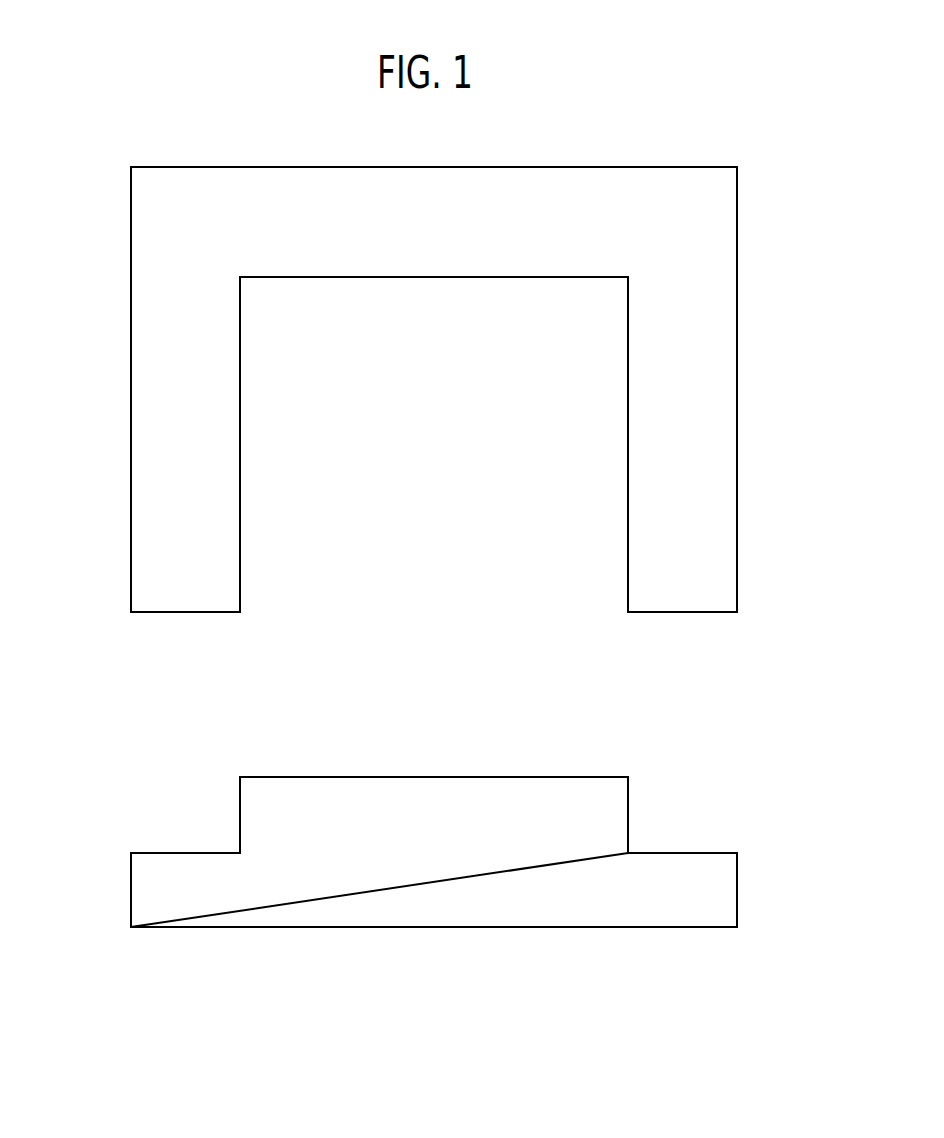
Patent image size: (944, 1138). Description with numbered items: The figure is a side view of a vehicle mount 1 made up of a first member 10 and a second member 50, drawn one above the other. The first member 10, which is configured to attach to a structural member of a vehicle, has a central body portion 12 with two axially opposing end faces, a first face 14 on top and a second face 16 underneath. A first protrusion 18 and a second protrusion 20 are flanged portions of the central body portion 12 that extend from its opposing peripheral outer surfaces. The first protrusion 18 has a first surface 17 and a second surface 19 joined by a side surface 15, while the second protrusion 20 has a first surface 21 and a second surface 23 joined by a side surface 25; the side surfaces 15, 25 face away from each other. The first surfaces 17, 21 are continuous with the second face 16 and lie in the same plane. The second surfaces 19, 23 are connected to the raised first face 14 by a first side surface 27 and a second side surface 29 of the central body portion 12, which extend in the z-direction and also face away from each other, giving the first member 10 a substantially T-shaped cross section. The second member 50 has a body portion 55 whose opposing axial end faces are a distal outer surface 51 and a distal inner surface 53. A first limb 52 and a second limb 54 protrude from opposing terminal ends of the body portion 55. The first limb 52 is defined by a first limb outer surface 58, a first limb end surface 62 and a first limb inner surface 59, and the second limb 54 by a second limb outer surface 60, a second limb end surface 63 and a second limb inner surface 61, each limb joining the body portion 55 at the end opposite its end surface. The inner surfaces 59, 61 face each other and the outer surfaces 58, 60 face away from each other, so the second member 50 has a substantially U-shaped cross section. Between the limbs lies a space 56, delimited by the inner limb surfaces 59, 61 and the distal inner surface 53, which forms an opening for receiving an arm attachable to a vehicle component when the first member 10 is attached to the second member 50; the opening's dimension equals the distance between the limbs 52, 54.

The vehicle mount 1 is at (700, 115).
The first member 10 is at (522, 908).
The central body portion 12 is at (420, 872).
The first face 14 is at (452, 777).
The side surface 15 is at (131, 890).
The second face 16 is at (415, 927).
The first surface 17 is at (197, 927).
The first protrusion 18 is at (185, 898).
The second surface 19 is at (159, 853).
The second protrusion 20 is at (713, 897).
The first surface 21 is at (692, 927).
The second surface 23 is at (703, 853).
The side surface 25 is at (737, 887).
The first side surface 27 is at (239, 808).
The second side surface 29 is at (628, 805).
The second member 50 is at (560, 200).
The distal outer surface 51 is at (213, 167).
The first limb 52 is at (168, 430).
The distal inner surface 53 is at (460, 277).
The second limb 54 is at (707, 505).
The body portion 55 is at (413, 237).
The space 56 is at (418, 452).
The first limb outer surface 58 is at (131, 317).
The first limb inner surface 59 is at (240, 408).
The second limb outer surface 60 is at (737, 382).
The second limb inner surface 61 is at (628, 436).
The first limb end surface 62 is at (200, 612).
The second limb end surface 63 is at (667, 612).